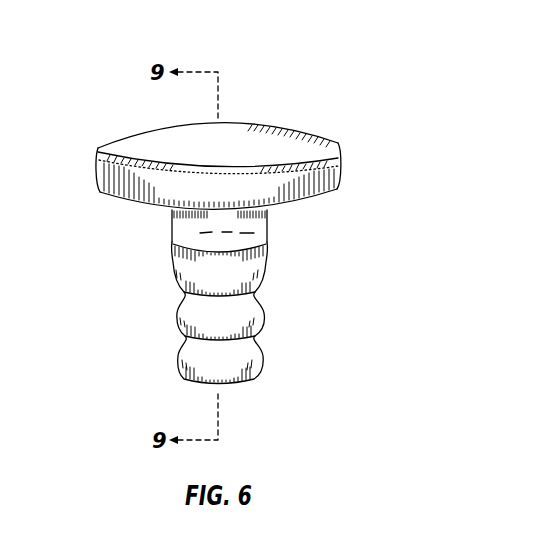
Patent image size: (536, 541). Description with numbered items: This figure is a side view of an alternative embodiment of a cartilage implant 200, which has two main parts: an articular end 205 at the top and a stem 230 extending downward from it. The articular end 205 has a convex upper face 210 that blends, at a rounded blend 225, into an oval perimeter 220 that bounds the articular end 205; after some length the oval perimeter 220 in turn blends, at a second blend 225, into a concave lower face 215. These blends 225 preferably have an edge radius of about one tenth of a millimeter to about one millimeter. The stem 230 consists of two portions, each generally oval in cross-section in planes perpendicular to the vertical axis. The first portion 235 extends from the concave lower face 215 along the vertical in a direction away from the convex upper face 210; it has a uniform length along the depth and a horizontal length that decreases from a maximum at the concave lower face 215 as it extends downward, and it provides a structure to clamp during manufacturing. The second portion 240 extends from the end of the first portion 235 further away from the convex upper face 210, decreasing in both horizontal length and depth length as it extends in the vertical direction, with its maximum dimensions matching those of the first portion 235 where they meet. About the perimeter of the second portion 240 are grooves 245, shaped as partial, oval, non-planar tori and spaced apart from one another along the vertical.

The cartilage implant 200 is at (264, 55).
The articular end 205 is at (93, 147).
The convex upper face 210 is at (292, 130).
The concave lower face 215 is at (306, 215).
The oval perimeter 220 is at (340, 173).
The blends 225 is at (343, 141).
The stem 230 is at (110, 212).
The first portion 235 is at (266, 221).
The second portion 240 is at (165, 232).
The grooves 245 is at (260, 334).